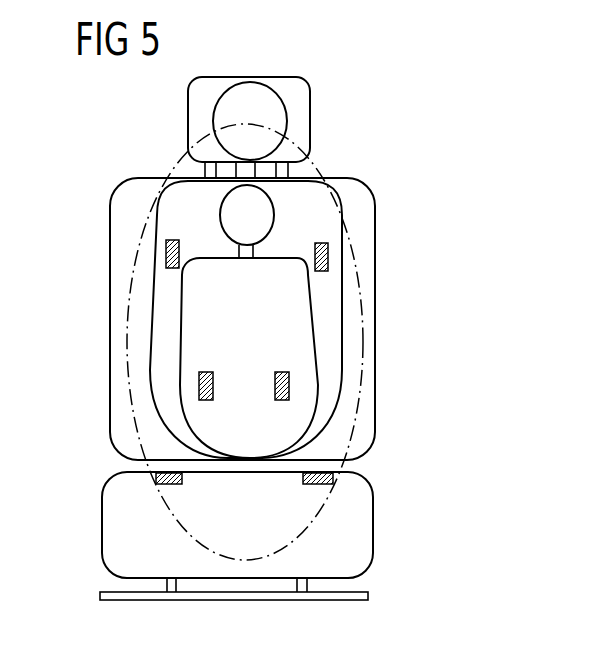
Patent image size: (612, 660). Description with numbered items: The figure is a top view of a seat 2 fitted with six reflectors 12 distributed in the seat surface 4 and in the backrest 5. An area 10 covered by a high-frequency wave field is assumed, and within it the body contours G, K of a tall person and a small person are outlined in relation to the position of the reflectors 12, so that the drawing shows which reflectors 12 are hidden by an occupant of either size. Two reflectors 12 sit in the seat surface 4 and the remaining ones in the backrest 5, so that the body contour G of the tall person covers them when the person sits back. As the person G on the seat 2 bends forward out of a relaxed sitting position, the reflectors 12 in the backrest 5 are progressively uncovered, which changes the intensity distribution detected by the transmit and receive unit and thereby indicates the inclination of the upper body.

The seat 2 is at (400, 483).
The seat surface 4 is at (360, 532).
The backrest 5 is at (367, 413).
The area covered by the wave field 10 is at (188, 162).
The reflectors 12 is at (178, 240).
The body contour of a tall person G is at (345, 228).
The body contour of a small person K is at (330, 325).